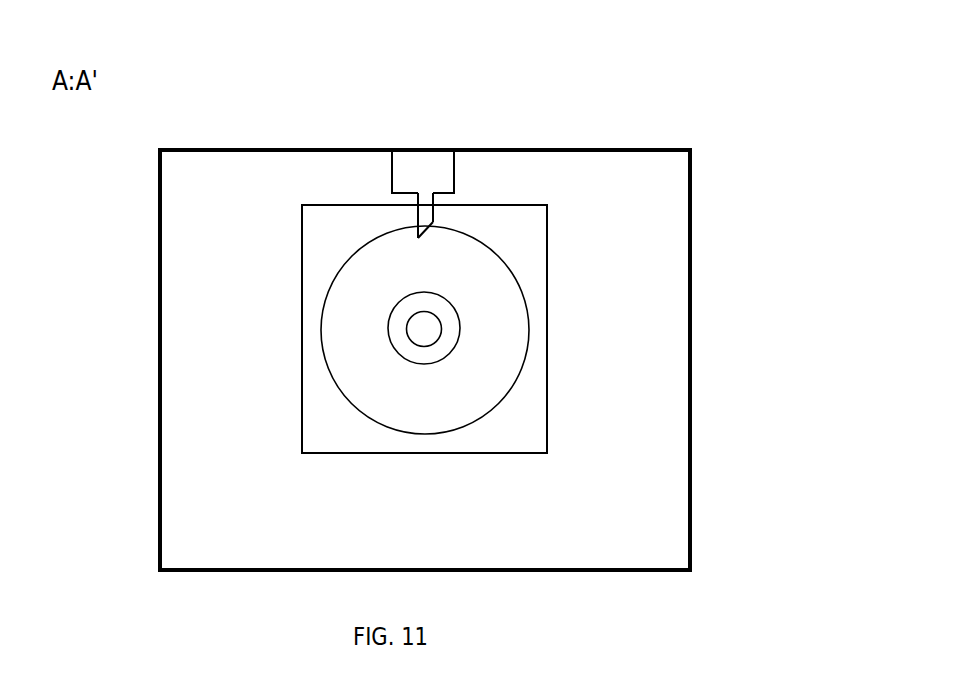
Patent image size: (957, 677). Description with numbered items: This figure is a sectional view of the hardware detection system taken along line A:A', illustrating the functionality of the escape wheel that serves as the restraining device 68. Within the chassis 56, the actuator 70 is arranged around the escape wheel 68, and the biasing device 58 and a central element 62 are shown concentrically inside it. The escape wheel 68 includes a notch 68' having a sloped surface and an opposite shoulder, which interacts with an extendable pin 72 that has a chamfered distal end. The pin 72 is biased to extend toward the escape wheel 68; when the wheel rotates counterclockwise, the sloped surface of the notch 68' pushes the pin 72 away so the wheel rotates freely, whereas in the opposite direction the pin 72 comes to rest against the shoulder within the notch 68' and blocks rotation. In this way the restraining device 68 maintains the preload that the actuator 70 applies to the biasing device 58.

The chassis 56 is at (690, 555).
The actuator 70 is at (560, 233).
The restraining device 68 is at (546, 330).
The notch 68' is at (496, 148).
The contact body biasing device 58 is at (450, 422).
The central opening 62 is at (425, 515).
The extendable pin 72 is at (428, 212).